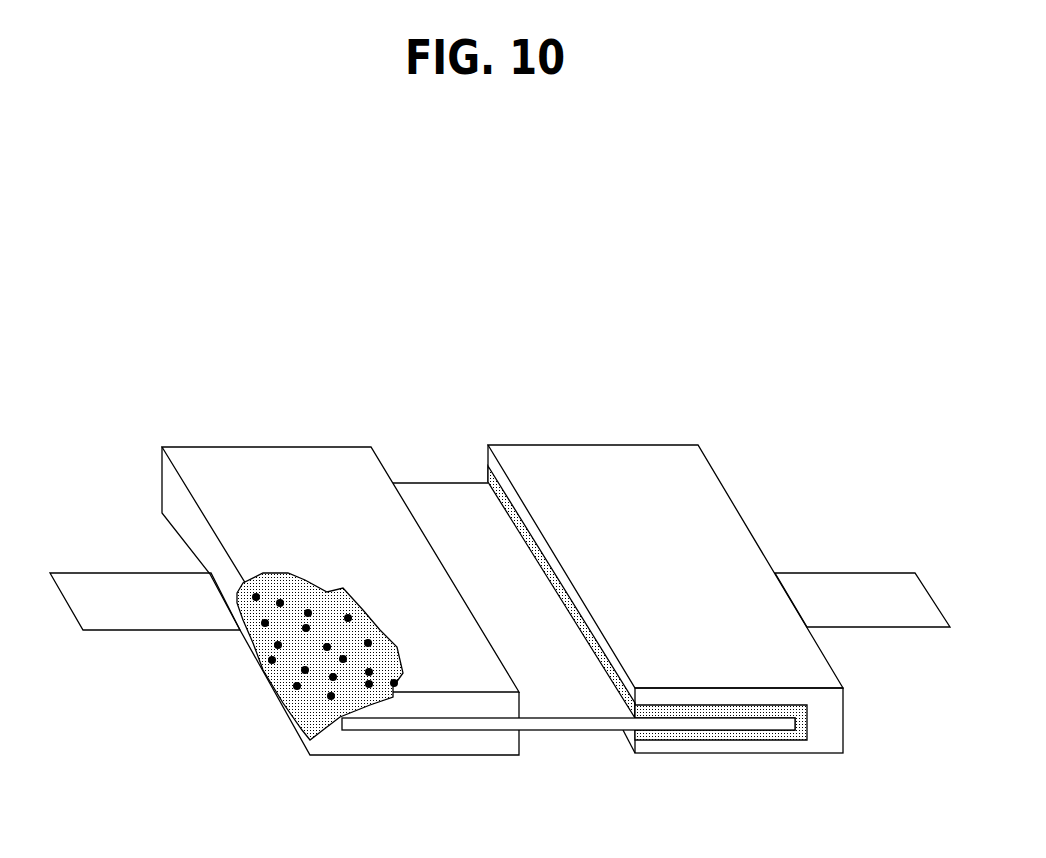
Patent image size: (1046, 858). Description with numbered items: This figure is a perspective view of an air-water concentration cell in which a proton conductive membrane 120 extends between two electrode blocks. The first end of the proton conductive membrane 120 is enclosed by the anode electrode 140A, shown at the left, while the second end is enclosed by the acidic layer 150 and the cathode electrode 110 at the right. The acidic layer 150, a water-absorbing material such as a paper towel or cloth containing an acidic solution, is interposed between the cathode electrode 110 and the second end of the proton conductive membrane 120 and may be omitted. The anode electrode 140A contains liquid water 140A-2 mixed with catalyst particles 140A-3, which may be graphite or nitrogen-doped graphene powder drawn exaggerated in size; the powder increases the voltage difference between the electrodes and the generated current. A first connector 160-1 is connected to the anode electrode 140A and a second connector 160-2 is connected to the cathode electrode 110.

The cathode electrode 110 is at (752, 753).
The proton conductive membrane 120 is at (446, 730).
The anode electrode 140A is at (303, 500).
The liquid water 140A-2 is at (326, 632).
The catalyst particles 140A-3 is at (297, 686).
The acidic layer 150 is at (807, 723).
The first connector 160-1 is at (88, 573).
The second connector 160-2 is at (817, 573).